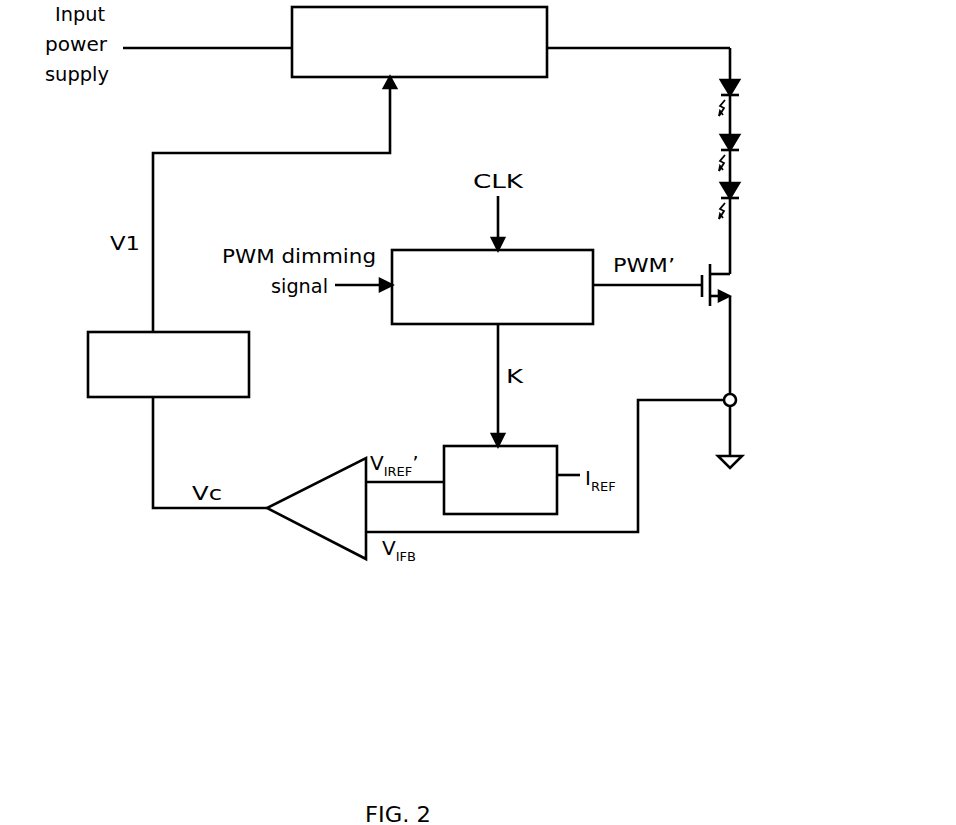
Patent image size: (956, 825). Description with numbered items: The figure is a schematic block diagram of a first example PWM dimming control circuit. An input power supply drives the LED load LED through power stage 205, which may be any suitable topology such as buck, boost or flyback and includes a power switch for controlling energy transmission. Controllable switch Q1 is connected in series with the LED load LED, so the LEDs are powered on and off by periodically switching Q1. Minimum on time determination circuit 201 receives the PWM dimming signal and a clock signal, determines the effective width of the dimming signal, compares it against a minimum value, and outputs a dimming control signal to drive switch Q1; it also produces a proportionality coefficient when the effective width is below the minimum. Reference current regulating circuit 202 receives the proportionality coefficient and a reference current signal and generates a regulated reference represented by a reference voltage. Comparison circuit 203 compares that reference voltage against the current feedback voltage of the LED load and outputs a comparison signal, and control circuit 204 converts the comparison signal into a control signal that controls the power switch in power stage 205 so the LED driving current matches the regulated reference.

The minimum on time determination circuit 201 is at (492, 287).
The reference current regulating circuit 202 is at (500, 480).
The comparison circuit 203 is at (316, 508).
The control circuit 204 is at (168, 364).
The power stage 205 is at (419, 42).
The controllable switch Q1 is at (728, 291).
The LED load LED is at (747, 152).